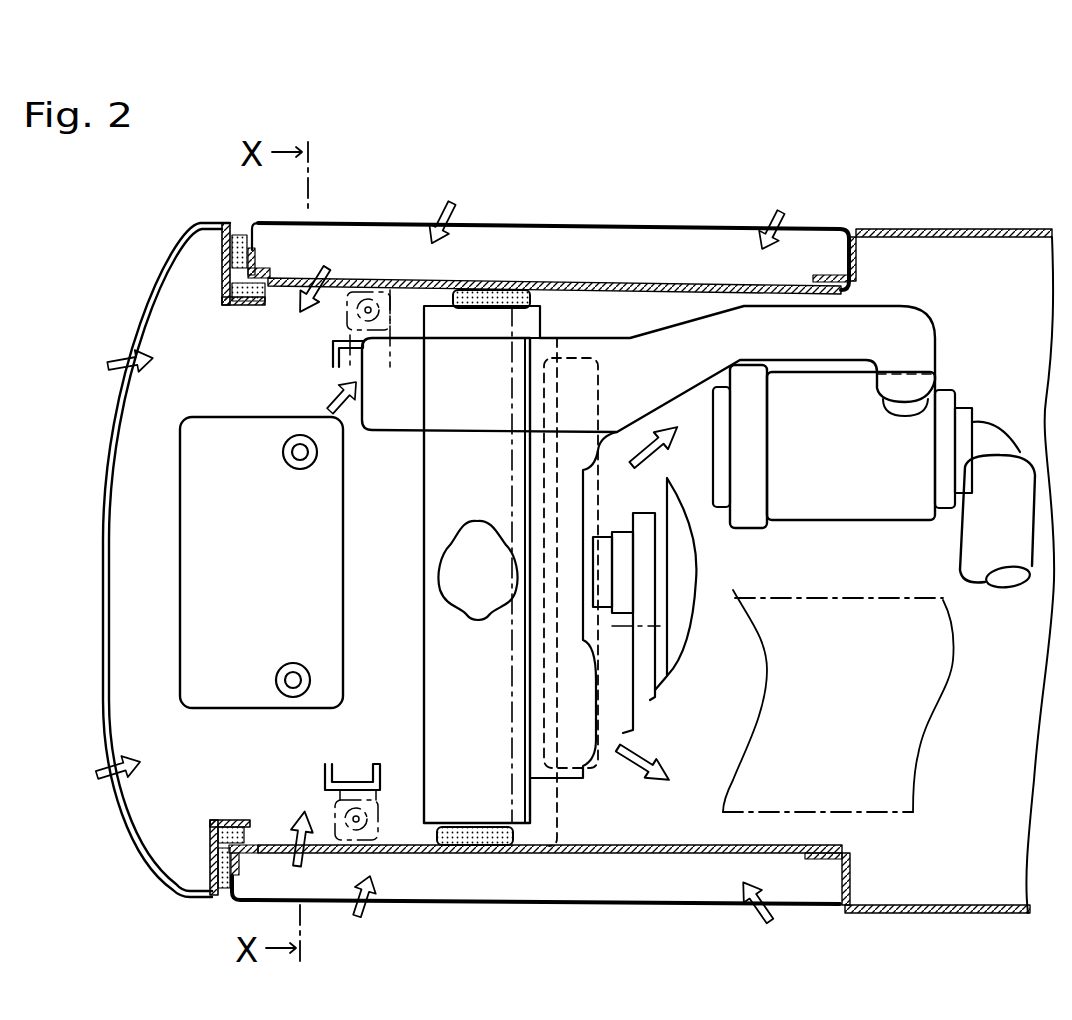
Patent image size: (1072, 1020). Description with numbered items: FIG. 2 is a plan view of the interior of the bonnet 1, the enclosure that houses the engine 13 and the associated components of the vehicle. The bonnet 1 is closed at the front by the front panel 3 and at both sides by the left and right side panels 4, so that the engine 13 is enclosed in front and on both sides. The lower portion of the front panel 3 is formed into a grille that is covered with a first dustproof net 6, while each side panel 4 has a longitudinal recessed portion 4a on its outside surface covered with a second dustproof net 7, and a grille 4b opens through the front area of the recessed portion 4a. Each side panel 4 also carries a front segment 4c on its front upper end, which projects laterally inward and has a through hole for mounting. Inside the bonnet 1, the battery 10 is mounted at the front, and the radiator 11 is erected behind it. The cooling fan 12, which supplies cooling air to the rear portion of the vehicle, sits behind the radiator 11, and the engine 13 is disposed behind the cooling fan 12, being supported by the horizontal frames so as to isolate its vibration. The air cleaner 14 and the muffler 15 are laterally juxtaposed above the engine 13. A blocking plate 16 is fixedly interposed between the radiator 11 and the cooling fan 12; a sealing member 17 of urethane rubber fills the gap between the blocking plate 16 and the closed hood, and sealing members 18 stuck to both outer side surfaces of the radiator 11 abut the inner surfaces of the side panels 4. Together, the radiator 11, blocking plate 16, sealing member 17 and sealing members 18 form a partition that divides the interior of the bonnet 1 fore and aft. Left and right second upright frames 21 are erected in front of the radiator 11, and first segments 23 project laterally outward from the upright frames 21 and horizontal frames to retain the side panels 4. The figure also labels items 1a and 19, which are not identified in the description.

The bonnet 1 is at (111, 256).
The interior space 1a is at (386, 580).
The front panel 3 is at (222, 218).
The side panel 4 is at (958, 230).
The longitudinal recessed portion 4a is at (597, 283).
The grille 4b is at (282, 289).
The front segment 4c is at (396, 306).
The first dustproof net 6 is at (100, 560).
The second dustproof net 7 is at (563, 226).
The battery 10 is at (258, 572).
The radiator 11 is at (480, 720).
The cooling fan 12 is at (613, 428).
The engine 13 is at (676, 626).
The air cleaner 14 is at (832, 480).
The muffler 15 is at (850, 596).
The blocking plate 16 is at (542, 320).
The sealing member 17 is at (566, 826).
The sealing member 18 is at (484, 291).
The seal member 19 is at (232, 288).
The second upright frame 21 is at (332, 372).
The first segment 23 is at (346, 322).